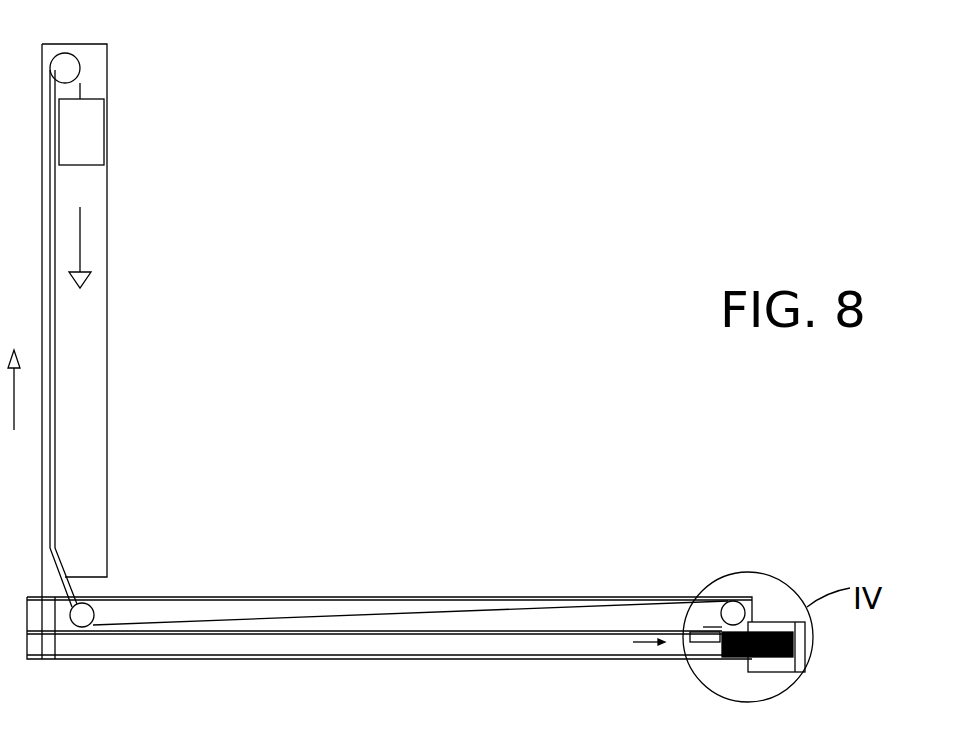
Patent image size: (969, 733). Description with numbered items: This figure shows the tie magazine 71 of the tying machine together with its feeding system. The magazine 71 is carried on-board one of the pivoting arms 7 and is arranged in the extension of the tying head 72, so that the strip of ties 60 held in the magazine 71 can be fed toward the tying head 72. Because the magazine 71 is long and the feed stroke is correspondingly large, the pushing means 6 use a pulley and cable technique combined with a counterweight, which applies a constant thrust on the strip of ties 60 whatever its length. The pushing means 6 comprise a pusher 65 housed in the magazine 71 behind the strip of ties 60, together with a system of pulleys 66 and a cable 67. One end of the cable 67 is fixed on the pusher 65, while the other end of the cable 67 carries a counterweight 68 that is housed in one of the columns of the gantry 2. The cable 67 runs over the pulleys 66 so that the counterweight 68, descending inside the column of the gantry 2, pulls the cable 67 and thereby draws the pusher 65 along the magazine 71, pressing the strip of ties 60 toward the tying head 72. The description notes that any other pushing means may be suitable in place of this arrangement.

The gantry 2 is at (97, 383).
The pushing means 6 is at (473, 577).
The pivoting arm 7 is at (283, 598).
The tie 60 is at (740, 672).
The pusher 65 is at (702, 636).
The pulleys 66 is at (72, 69).
The cable 67 is at (562, 607).
The counterweight 68 is at (83, 137).
The tie magazine 71 is at (460, 642).
The tying head 72 is at (780, 620).